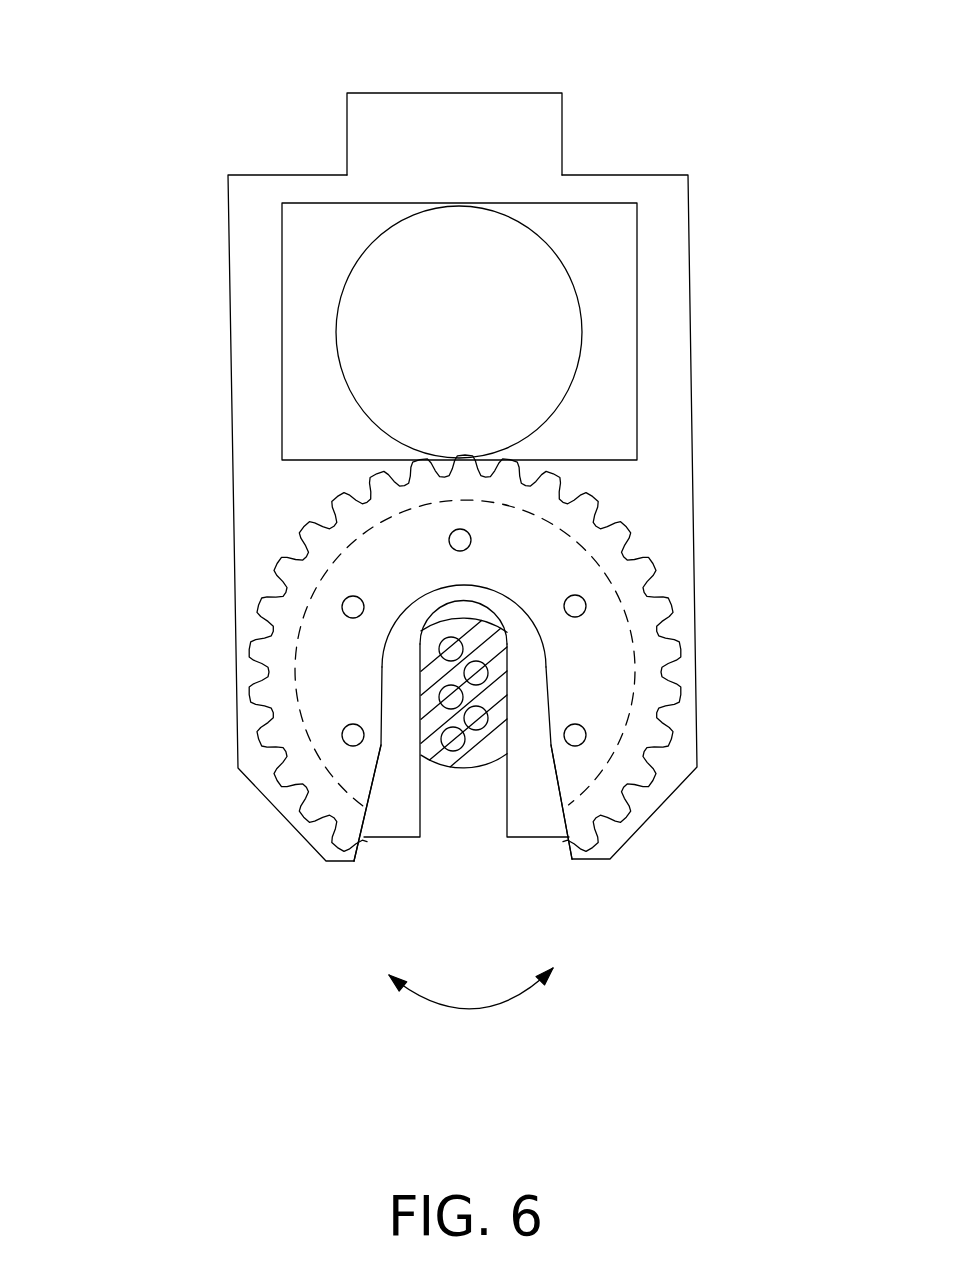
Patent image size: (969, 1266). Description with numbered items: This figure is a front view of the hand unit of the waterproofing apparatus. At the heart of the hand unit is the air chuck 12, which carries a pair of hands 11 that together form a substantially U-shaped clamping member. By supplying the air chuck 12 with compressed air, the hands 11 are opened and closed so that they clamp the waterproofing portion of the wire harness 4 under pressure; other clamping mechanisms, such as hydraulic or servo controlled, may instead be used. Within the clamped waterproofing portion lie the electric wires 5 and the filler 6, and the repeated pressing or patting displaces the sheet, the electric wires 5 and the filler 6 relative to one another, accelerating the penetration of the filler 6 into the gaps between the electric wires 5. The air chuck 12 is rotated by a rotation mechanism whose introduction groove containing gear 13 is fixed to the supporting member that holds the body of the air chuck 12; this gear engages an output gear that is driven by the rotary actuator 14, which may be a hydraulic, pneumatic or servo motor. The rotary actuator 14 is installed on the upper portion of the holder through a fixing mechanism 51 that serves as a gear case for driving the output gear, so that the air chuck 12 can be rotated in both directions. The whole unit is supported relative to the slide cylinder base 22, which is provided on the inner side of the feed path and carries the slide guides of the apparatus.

The wire harness 4 is at (457, 770).
The electric wires 5 is at (445, 690).
The filler 6 is at (437, 716).
The hands 11 is at (398, 840).
The air chuck 12 is at (475, 92).
The introduction groove containing gear 13 is at (670, 597).
The rotary actuator 14 is at (578, 303).
The slide cylinder base 22 is at (225, 248).
The fixing mechanism 51 is at (615, 402).